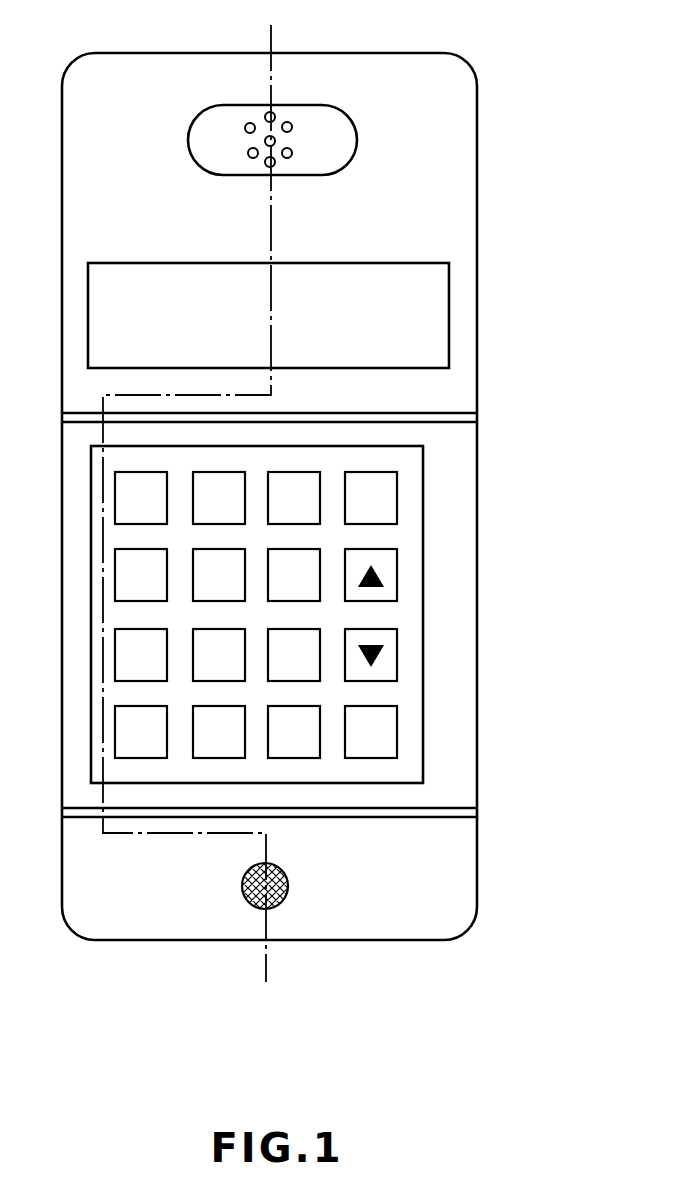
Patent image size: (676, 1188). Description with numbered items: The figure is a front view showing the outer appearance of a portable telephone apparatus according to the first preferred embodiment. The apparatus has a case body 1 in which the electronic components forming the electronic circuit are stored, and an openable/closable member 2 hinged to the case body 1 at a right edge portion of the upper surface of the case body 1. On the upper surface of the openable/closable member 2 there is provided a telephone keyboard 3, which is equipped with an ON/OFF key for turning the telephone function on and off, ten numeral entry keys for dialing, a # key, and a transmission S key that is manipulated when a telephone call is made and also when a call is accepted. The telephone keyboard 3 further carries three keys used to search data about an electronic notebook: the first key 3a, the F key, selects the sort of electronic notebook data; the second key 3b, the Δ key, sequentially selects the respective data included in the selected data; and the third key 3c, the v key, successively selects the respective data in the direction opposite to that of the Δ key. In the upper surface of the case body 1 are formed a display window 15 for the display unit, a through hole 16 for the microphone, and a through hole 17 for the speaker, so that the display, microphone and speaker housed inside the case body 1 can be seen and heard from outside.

The case body 1 is at (452, 203).
The openable/closable member 2 is at (453, 450).
The telephone keyboard 3 is at (407, 738).
The first key 3a is at (397, 502).
The second key 3b is at (392, 573).
The third key 3c is at (392, 645).
The display window 15 is at (433, 328).
The through hole 16 is at (240, 895).
The through hole 17 is at (291, 124).